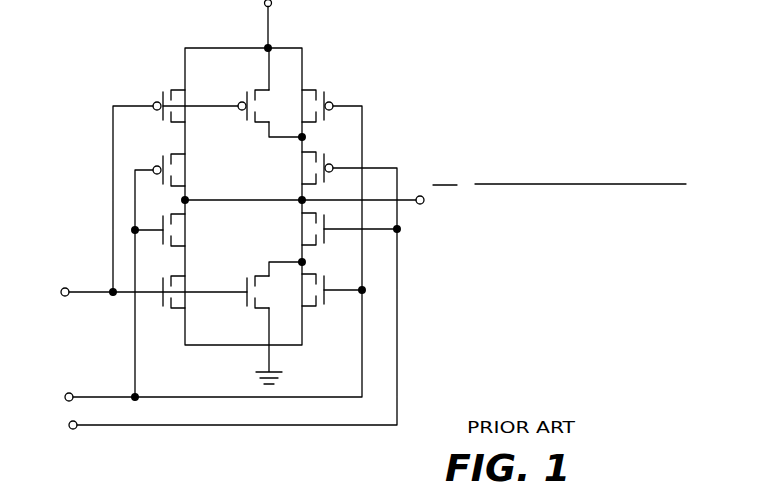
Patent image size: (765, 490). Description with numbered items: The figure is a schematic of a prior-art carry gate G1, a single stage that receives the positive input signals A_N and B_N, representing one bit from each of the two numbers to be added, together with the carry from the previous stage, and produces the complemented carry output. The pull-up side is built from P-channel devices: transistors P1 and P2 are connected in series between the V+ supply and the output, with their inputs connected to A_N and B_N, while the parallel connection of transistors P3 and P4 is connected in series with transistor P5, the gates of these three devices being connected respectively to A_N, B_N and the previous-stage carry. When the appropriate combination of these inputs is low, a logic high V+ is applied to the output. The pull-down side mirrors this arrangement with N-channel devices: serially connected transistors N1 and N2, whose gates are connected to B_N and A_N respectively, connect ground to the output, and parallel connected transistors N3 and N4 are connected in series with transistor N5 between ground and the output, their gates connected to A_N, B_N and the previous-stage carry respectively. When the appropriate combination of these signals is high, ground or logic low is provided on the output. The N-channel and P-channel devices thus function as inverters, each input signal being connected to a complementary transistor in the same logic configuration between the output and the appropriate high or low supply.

The carry gate G1 is at (359, 219).
The P-channel transistor P1 is at (189, 170).
The P-channel transistor P2 is at (188, 103).
The P-channel transistor P3 is at (270, 106).
The P-channel transistor P4 is at (326, 115).
The P-channel transistor P5 is at (304, 168).
The N-channel transistor N1 is at (188, 233).
The N-channel transistor N2 is at (188, 298).
The N-channel transistor N3 is at (267, 293).
The N-channel transistor N4 is at (327, 298).
The N-channel transistor N5 is at (300, 230).